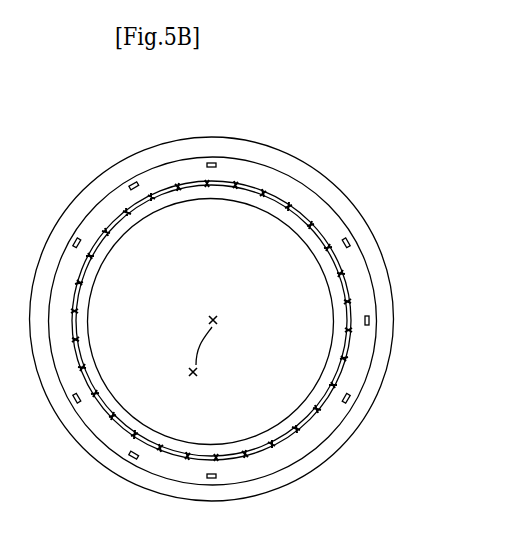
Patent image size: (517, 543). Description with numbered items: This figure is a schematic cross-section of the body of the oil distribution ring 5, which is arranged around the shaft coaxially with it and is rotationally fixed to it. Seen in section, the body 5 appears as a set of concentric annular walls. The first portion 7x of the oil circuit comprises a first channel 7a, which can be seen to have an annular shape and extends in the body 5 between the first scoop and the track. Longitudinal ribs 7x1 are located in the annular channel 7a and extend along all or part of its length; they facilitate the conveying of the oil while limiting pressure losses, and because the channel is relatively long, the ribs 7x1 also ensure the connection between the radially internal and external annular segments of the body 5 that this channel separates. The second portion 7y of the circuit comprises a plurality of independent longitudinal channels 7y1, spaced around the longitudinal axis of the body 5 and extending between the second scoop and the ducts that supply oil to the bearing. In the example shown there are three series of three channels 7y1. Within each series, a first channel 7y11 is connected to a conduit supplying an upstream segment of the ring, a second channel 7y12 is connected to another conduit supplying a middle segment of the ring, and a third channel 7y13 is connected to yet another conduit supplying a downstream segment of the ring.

The oil distribution ring 5 is at (408, 275).
The first portion of the circuit 7x is at (260, 312).
The first channel 7a is at (323, 230).
The longitudinal ribs 7x1 is at (311, 225).
The second portion of the circuit 7y is at (209, 164).
The second channels 7y1 is at (185, 222).
The first channel 7y11 is at (80, 247).
The second channel 7y12 is at (135, 189).
The third channel 7y13 is at (212, 169).